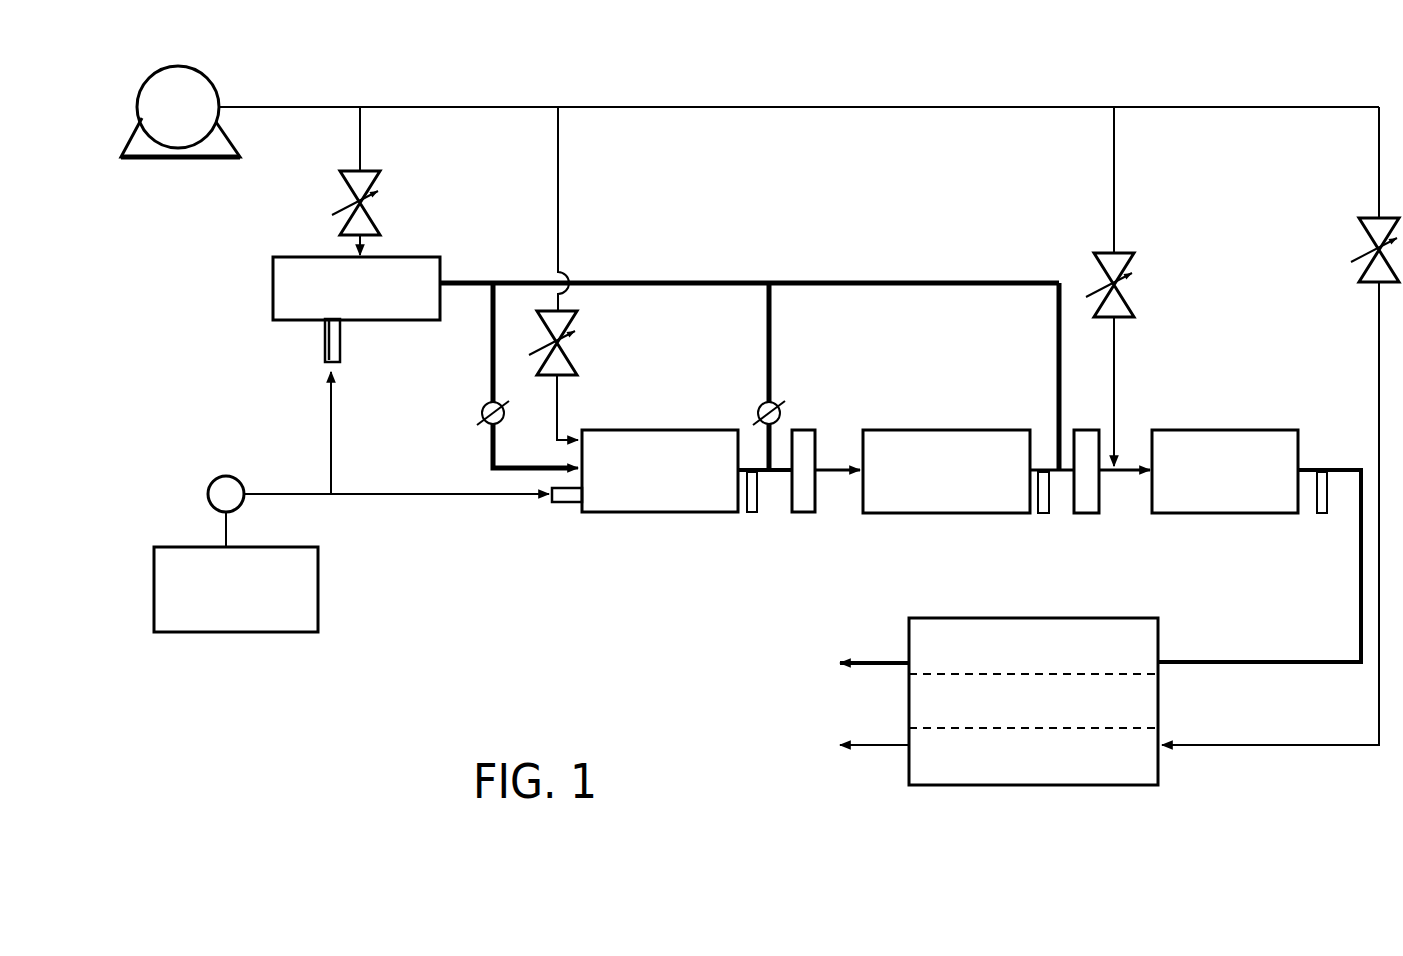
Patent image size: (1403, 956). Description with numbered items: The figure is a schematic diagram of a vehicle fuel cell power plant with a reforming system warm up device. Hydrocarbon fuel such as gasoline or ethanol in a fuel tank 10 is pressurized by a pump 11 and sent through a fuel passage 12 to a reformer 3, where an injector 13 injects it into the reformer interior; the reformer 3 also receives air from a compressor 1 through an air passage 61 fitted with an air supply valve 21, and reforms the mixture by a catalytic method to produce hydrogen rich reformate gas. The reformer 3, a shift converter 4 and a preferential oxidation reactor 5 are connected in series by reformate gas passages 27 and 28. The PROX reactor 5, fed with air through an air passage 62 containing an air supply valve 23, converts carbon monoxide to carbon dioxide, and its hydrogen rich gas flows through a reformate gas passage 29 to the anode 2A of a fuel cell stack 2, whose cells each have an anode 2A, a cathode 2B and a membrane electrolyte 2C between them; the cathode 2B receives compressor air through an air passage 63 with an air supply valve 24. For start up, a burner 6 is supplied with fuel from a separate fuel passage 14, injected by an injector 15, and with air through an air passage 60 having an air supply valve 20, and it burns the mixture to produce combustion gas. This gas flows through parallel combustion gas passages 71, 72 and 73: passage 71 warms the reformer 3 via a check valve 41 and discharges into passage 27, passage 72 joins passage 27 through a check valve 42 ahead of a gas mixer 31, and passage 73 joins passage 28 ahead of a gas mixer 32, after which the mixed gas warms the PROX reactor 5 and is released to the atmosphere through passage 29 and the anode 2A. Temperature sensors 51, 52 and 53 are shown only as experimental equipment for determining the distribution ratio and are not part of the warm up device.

The compressor 1 is at (213, 92).
The fuel cell stack 2 is at (1055, 786).
The anode 2A is at (914, 646).
The cathode 2B is at (934, 777).
The membrane electrolyte 2C is at (916, 708).
The reformer 3 is at (636, 513).
The shift converter 4 is at (978, 430).
The preferential oxidation reactor 5 is at (1216, 429).
The burner 6 is at (428, 257).
The fuel tank 10 is at (318, 590).
The pump 11 is at (222, 478).
The fuel passage 12 is at (412, 497).
The injector 13 is at (573, 505).
The fuel passage 14 is at (333, 414).
The injector 15 is at (324, 346).
The air supply valve 20 is at (350, 189).
The air supply valve 21 is at (572, 361).
The air supply valve 23 is at (1118, 319).
The air supply valve 24 is at (1362, 237).
The reformate gas passage 27 is at (822, 463).
The reformate gas passage 28 is at (1124, 464).
The reformate gas passage 29 is at (1341, 666).
The gas mixer 31 is at (802, 428).
The gas mixer 32 is at (1086, 514).
The check valve 41 is at (483, 423).
The check valve 42 is at (760, 410).
The temperature sensor 51 is at (752, 513).
The temperature sensor 52 is at (1044, 514).
The temperature sensor 53 is at (1324, 514).
The air passage 60 is at (358, 141).
The air passage 61 is at (560, 177).
The air passage 62 is at (1112, 146).
The air passage 63 is at (1378, 133).
The combustion gas passage 71 is at (491, 341).
The combustion gas passage 72 is at (772, 318).
The combustion gas passage 73 is at (1057, 318).